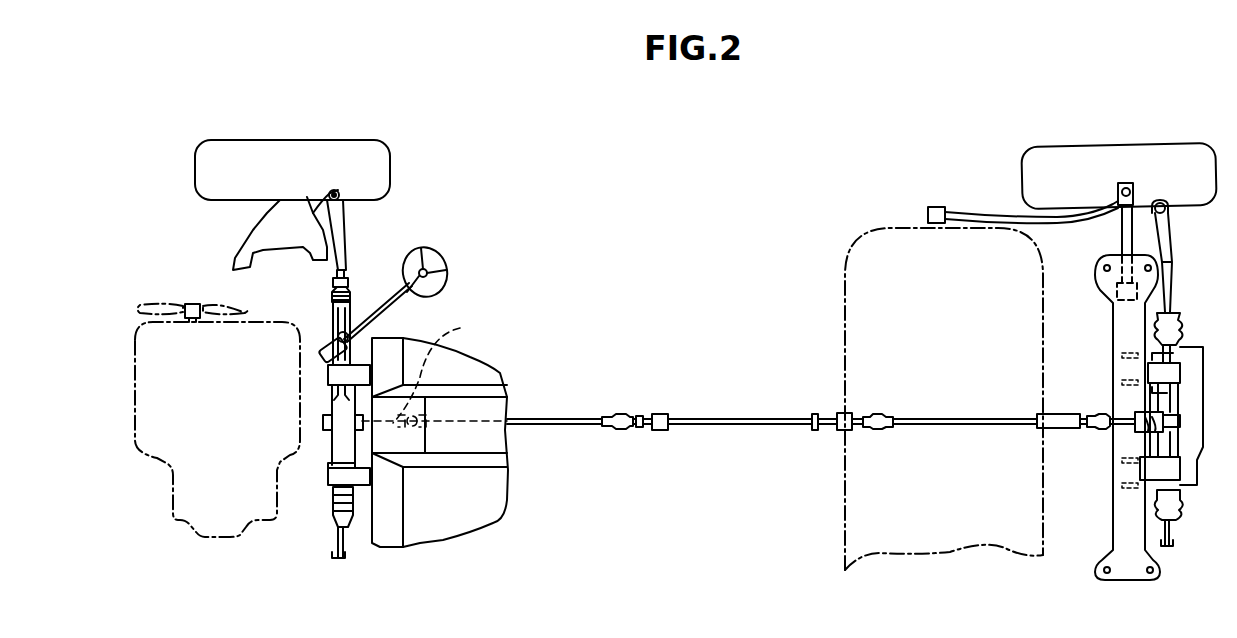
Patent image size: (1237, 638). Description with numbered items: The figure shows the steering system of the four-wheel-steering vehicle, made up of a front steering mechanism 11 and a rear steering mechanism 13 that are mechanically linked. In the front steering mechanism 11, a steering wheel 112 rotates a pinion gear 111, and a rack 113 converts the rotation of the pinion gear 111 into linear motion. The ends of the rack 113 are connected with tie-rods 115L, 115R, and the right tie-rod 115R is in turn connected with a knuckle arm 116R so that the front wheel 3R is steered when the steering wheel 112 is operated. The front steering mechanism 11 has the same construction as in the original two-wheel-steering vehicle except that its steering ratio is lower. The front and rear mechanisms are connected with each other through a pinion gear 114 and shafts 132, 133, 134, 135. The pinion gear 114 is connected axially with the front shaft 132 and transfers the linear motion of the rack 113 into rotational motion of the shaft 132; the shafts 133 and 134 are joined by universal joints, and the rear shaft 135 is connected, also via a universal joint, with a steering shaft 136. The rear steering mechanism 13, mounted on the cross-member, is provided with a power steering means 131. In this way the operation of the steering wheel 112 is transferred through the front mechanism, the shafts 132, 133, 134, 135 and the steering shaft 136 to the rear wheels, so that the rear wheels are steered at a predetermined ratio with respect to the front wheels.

The front wheel 3R is at (333, 155).
The knuckle arm 116R is at (338, 187).
The tie-rod 115R is at (340, 243).
The rack 113 is at (343, 318).
The steering wheel 112 is at (448, 262).
The front steering mechanism 11 is at (318, 326).
The pinion gear 111 is at (323, 348).
The pinion gear 114 is at (327, 432).
The tie-rod 115L is at (333, 540).
The front shaft 132 is at (435, 428).
The shaft 133 is at (550, 423).
The shaft 134 is at (727, 420).
The rear shaft 135 is at (957, 418).
The steering shaft 136 is at (1123, 422).
The power steering means 131 is at (1163, 427).
The rear steering mechanism 13 is at (1186, 314).